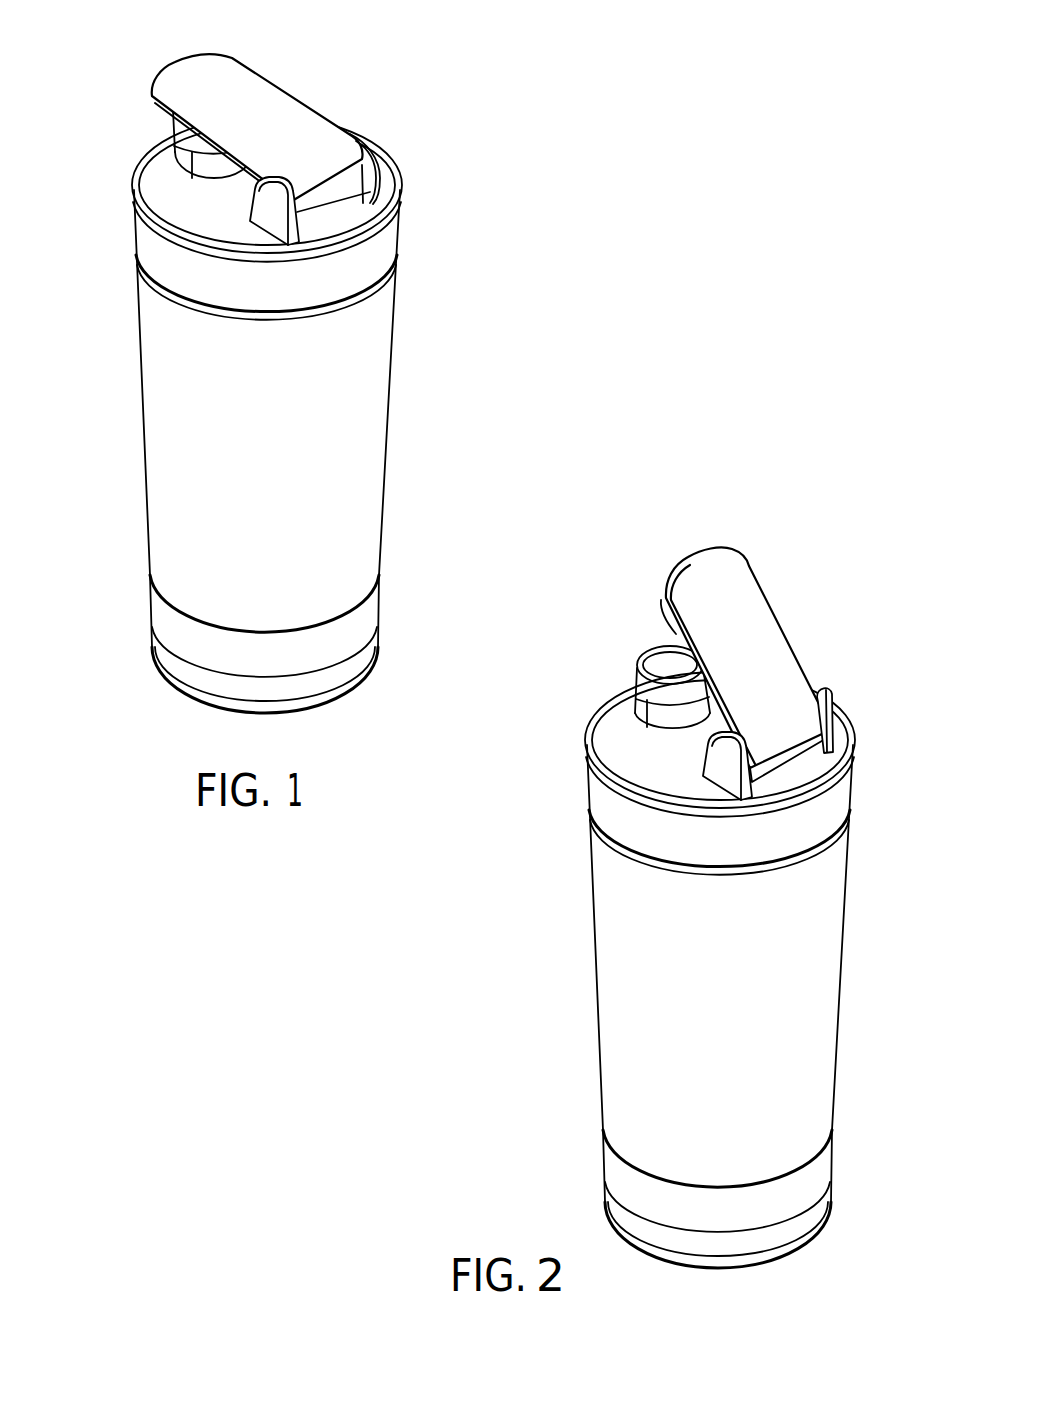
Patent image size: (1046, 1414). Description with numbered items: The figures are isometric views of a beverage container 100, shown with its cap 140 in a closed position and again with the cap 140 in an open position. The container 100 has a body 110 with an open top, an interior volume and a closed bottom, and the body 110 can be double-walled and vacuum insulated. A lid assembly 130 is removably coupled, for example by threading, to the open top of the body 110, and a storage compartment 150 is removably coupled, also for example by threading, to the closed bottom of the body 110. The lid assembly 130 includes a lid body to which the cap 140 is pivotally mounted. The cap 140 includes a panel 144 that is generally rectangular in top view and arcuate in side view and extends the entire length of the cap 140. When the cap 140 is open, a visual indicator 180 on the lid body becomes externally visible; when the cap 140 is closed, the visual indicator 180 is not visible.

In FIG. 1, the beverage container 100 is at (301, 357).
In FIG. 2, the beverage container 100 is at (711, 861).
In FIG. 1, the body 110 is at (313, 451).
In FIG. 2, the body 110 is at (773, 1006).
In FIG. 1, the lid assembly 130 is at (272, 161).
In FIG. 2, the lid assembly 130 is at (704, 665).
In FIG. 1, the cap 140 is at (157, 74).
In FIG. 2, the cap 140 is at (774, 618).
In FIG. 2, the panel 144 is at (779, 632).
In FIG. 1, the storage compartment 150 is at (383, 598).
In FIG. 2, the storage compartment 150 is at (842, 1162).
In FIG. 2, the visual indicator 180 is at (647, 701).